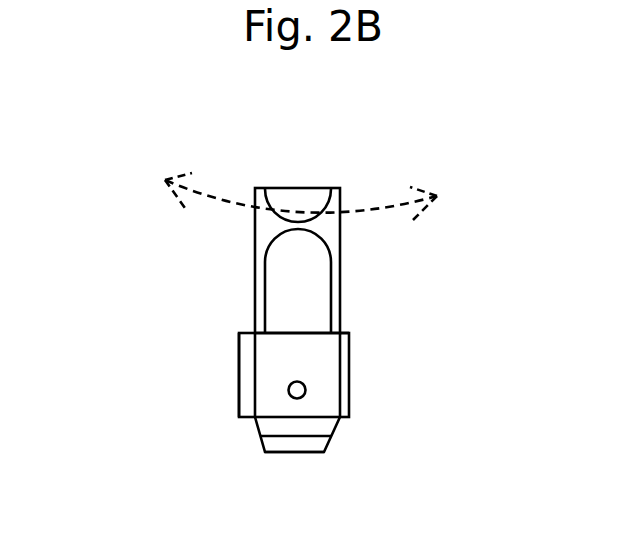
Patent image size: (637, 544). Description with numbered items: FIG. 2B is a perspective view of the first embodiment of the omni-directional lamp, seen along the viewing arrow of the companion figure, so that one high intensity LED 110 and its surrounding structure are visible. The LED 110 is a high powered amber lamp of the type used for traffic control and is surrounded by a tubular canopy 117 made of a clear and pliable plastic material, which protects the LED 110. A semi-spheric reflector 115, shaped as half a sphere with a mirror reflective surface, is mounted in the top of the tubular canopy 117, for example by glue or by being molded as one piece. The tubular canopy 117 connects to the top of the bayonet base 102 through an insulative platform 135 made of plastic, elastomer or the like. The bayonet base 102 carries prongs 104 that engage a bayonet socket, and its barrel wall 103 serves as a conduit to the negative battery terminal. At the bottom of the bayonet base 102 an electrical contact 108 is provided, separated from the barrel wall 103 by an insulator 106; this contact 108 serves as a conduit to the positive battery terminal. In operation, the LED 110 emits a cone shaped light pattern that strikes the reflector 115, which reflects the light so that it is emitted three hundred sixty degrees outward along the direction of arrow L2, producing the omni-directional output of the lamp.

The arrow L2 is at (301, 179).
The bayonet base 102 is at (326, 367).
The barrel wall 103 is at (238, 373).
The prongs 104 is at (295, 392).
The insulator 106 is at (315, 427).
The electrical contact 108 is at (295, 452).
The high intensity LED 110 is at (310, 262).
The semi-spheric reflector 115 is at (298, 205).
The tubular canopy 117 is at (253, 250).
The insulative platform 135 is at (352, 333).